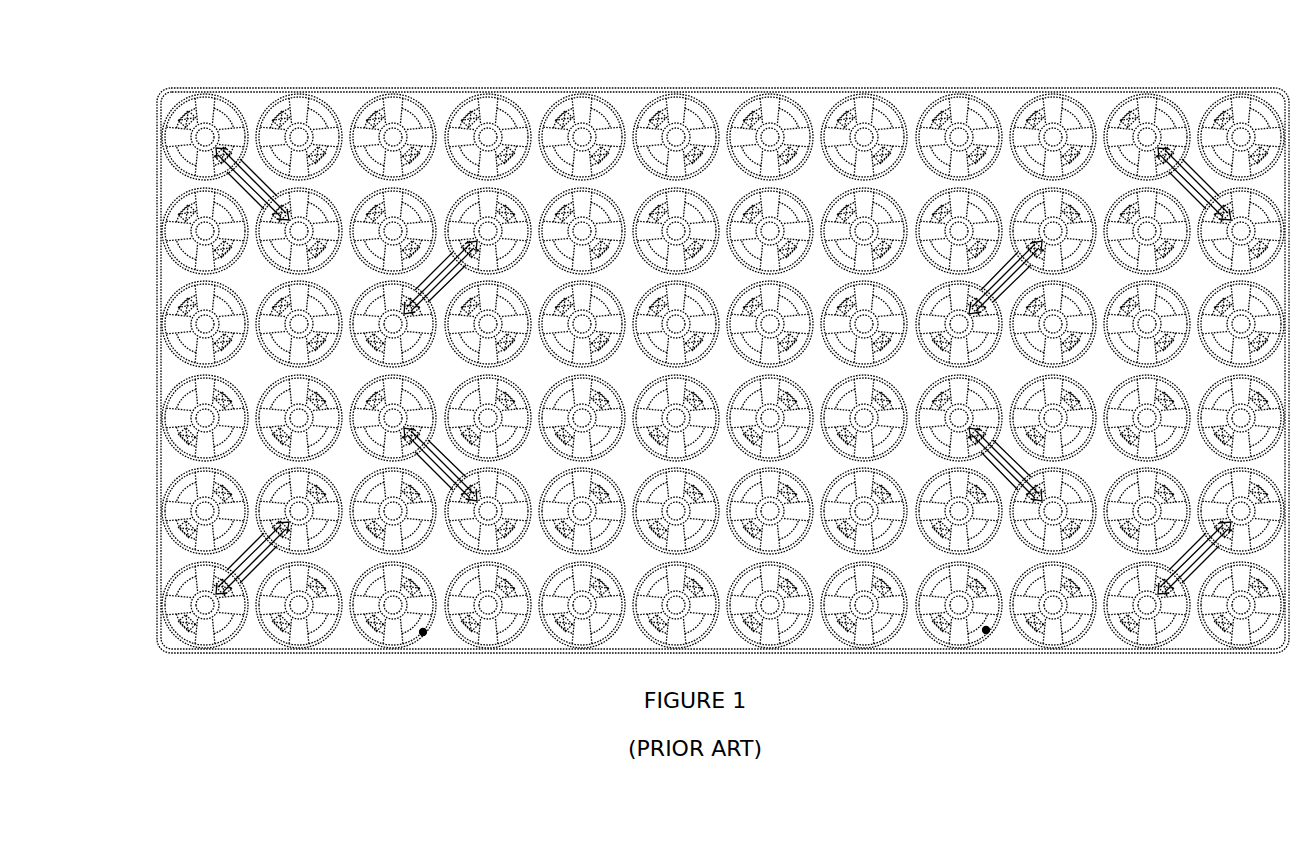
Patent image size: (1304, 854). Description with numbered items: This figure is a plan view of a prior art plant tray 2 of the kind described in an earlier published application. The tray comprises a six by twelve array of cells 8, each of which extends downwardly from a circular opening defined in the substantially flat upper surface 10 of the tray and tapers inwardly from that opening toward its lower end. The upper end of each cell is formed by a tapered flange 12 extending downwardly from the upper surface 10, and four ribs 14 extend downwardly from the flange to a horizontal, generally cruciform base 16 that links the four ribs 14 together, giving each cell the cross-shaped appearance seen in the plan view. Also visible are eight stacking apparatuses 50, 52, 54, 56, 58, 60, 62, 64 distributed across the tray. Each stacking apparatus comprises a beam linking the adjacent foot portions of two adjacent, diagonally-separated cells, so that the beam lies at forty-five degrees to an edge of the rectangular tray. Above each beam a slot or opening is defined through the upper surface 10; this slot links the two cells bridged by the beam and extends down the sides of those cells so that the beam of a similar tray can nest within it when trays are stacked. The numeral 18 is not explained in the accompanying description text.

The plant tray 2 is at (284, 672).
The cell 8 is at (428, 638).
The upper surface 10 is at (348, 642).
The tapered flange 12 is at (985, 630).
The rib 14 is at (832, 605).
The cruciform base 16 is at (938, 605).
The well tab 18 is at (1033, 617).
The stacking apparatus 50 is at (1193, 157).
The stacking apparatus 52 is at (1005, 270).
The stacking apparatus 54 is at (1193, 570).
The stacking apparatus 56 is at (1004, 490).
The stacking apparatus 58 is at (437, 250).
The stacking apparatus 60 is at (259, 160).
The stacking apparatus 62 is at (433, 470).
The stacking apparatus 64 is at (260, 560).